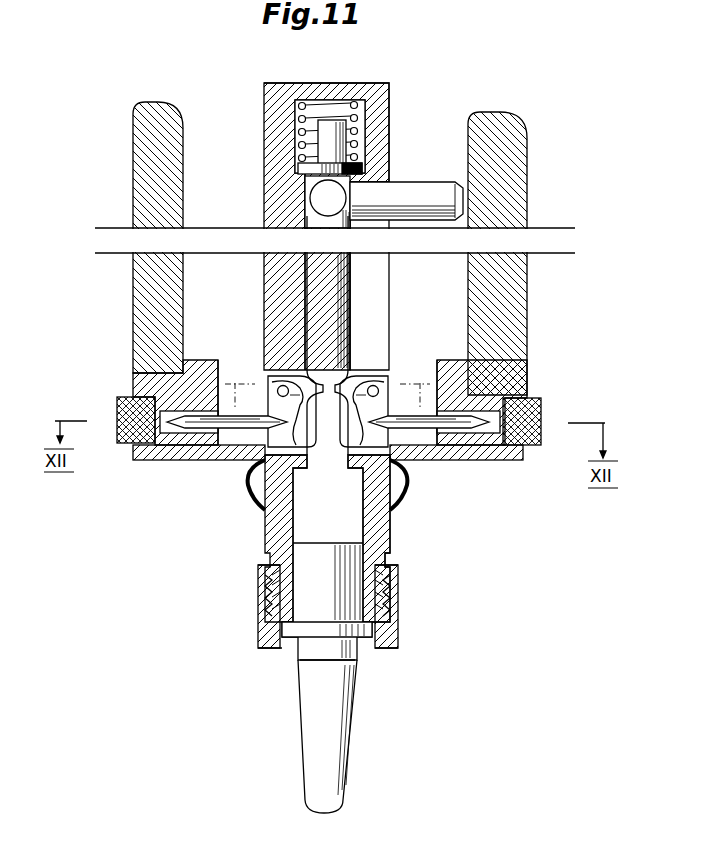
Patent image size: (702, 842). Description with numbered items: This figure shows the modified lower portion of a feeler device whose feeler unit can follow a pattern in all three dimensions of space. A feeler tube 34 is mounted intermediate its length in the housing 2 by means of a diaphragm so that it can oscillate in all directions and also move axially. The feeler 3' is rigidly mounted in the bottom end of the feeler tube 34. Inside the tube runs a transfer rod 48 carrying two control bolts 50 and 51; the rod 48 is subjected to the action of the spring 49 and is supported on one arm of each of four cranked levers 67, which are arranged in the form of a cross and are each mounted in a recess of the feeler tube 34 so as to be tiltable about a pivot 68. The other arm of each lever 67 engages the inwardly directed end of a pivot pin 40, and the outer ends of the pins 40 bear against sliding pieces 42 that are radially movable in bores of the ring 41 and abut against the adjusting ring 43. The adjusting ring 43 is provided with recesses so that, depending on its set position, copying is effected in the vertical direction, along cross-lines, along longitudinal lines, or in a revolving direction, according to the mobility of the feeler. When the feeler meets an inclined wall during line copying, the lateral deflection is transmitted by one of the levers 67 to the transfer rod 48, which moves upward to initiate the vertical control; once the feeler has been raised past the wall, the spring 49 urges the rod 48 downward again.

The housing 2 is at (152, 298).
The feeler tube 34 is at (387, 83).
The spring 49 is at (350, 112).
The control bolt 50 is at (322, 198).
The control bolt 51 is at (415, 193).
The transfer rod 48 is at (340, 342).
The pivot 68 is at (380, 391).
The ring 41 is at (140, 392).
The adjusting ring 43 is at (118, 441).
The pivot pin 40 is at (464, 450).
The sliding piece 42 is at (183, 432).
The cranked lever 67 is at (410, 462).
The feeler 3' is at (328, 634).